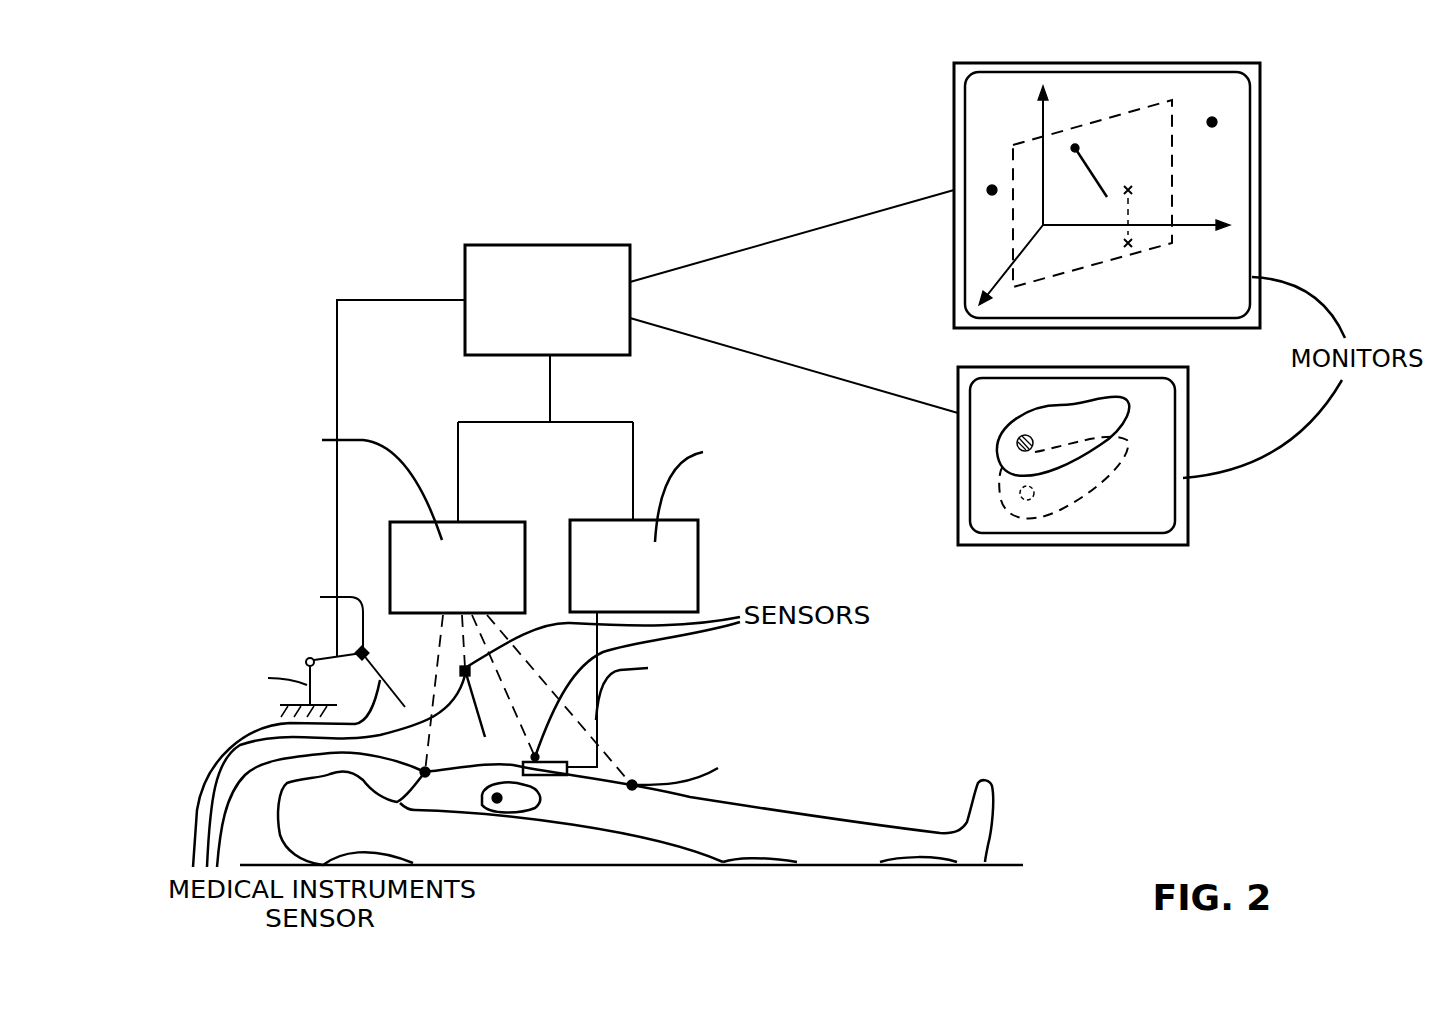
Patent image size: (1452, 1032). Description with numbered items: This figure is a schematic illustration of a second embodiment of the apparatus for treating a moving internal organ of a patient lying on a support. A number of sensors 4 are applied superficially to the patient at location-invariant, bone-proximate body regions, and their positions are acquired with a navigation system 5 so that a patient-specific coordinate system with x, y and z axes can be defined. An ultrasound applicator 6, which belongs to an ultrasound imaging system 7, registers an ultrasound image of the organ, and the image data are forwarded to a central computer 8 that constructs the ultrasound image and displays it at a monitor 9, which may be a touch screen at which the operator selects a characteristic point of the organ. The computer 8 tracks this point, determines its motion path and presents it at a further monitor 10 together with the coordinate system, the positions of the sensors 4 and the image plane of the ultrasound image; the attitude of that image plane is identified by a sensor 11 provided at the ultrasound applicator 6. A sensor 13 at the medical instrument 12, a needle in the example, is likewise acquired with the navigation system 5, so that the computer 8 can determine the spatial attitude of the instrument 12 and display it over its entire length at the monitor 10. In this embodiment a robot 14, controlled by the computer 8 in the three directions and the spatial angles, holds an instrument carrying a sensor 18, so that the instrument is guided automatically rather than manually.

The sensor 4 is at (420, 780).
The navigation system 5 is at (415, 520).
The ultrasound applicator 6 is at (480, 778).
The ultrasound imaging system 7 is at (700, 570).
The central computer 8 is at (513, 245).
The monitor 9 is at (1187, 432).
The further monitor 10 is at (1262, 165).
The sensor 11 is at (530, 758).
The medical instrument 12 is at (1090, 168).
The sensor 13 is at (1076, 144).
The robot 14 is at (304, 660).
The sensor 18 is at (378, 678).